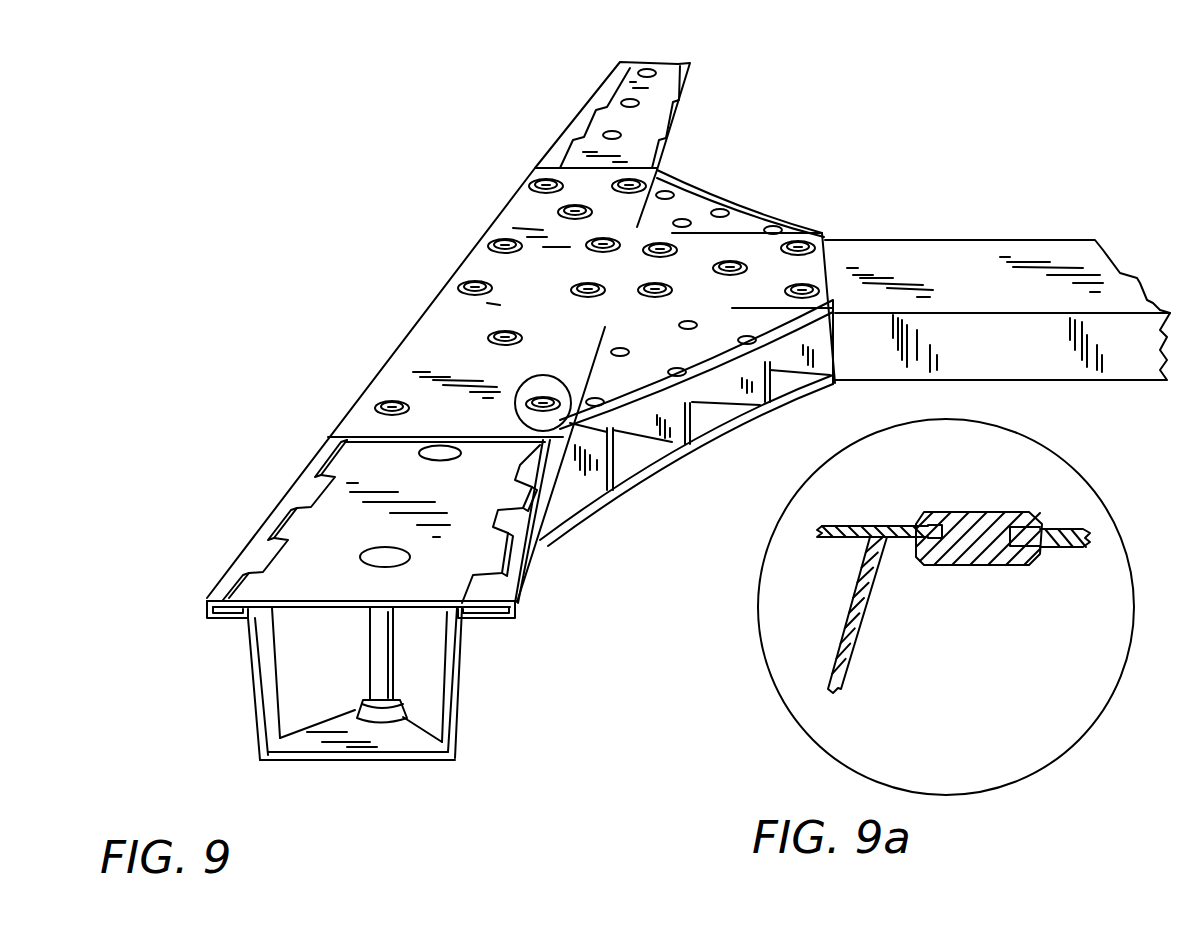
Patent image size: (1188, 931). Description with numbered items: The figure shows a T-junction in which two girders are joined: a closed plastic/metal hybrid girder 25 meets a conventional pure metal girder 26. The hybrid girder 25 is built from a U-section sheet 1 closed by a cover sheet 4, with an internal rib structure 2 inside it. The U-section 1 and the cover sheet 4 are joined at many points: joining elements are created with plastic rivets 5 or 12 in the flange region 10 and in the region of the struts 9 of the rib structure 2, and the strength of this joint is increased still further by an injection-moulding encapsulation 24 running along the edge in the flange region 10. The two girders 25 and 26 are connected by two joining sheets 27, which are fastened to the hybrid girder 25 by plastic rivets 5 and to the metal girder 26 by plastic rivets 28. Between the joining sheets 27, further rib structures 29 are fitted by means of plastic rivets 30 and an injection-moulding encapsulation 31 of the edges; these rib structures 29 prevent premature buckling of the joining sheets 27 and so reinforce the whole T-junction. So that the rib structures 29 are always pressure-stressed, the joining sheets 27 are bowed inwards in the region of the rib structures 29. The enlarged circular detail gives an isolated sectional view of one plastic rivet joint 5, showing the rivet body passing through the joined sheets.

The U-section sheet 1 is at (342, 760).
The internal rib structure 2 is at (427, 667).
The cover sheet 4 is at (320, 607).
The plastic rivet 5 is at (465, 297).
The struts of the rib structure 9 is at (373, 657).
The flange region 10 is at (202, 605).
The plastic rivet 12 is at (398, 558).
The injection-moulding encapsulation 24 is at (318, 463).
The closed plastic/metal hybrid girder 25 is at (467, 543).
The pure metal girder 26 is at (1040, 257).
The joining sheet 27 is at (517, 220).
The plastic rivet 28 is at (797, 243).
The rib structure 29 is at (590, 455).
The plastic rivet 30 is at (727, 215).
The injection-moulding encapsulation of the edges 31 is at (673, 177).